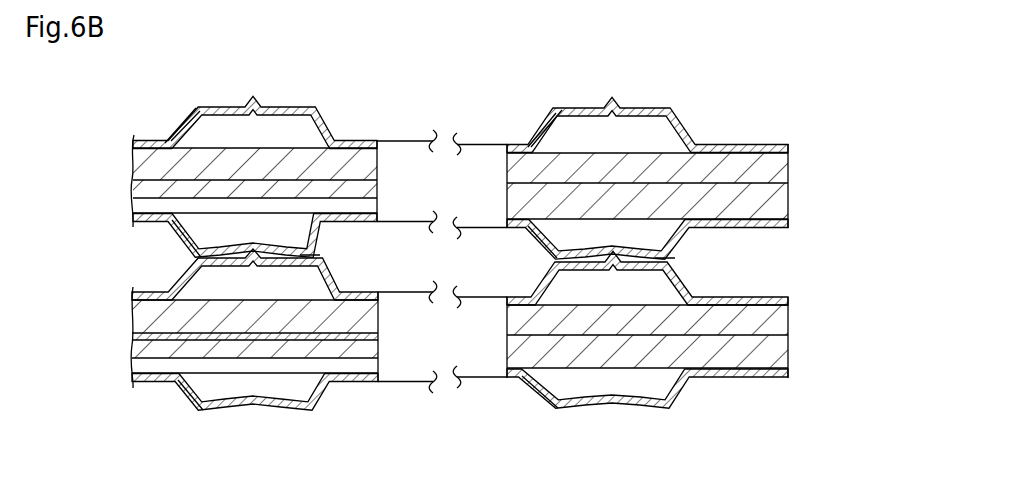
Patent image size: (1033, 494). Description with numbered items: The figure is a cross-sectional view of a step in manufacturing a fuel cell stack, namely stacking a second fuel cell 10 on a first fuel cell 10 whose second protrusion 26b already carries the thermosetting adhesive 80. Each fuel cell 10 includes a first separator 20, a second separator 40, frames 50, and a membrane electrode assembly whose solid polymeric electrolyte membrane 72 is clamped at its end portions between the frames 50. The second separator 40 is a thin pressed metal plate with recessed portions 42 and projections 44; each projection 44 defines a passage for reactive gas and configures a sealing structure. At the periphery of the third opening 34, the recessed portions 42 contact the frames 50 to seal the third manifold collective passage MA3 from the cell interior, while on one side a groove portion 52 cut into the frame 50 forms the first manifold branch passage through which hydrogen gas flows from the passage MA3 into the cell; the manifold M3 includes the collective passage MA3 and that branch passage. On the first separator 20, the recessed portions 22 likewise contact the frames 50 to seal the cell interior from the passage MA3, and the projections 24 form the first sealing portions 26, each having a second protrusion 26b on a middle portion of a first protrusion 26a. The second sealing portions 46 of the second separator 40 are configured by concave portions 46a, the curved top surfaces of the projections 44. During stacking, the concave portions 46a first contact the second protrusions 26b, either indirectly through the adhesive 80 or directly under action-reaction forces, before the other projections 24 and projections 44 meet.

The fuel cell 10 is at (505, 280).
The first separator 20 is at (460, 155).
The recessed portions 22 is at (369, 140).
The projections 24 is at (317, 107).
The first sealing portions 26 is at (460, 155).
The first protrusion 26a is at (194, 108).
The second protrusion 26b is at (255, 101).
The third opening 34 is at (453, 119).
The second separator 40 is at (461, 340).
The recessed portions 42 is at (353, 384).
The projections 44 is at (196, 240).
The second sealing portions 46 is at (403, 340).
The concave portion 46a is at (240, 424).
The frames 50 is at (378, 160).
The groove portion 52 is at (371, 212).
The electrolyte membrane 72 is at (378, 336).
The thermosetting adhesive 80 is at (318, 255).
The third manifold collective passage MA3 is at (507, 372).
The manifold M3 is at (528, 421).